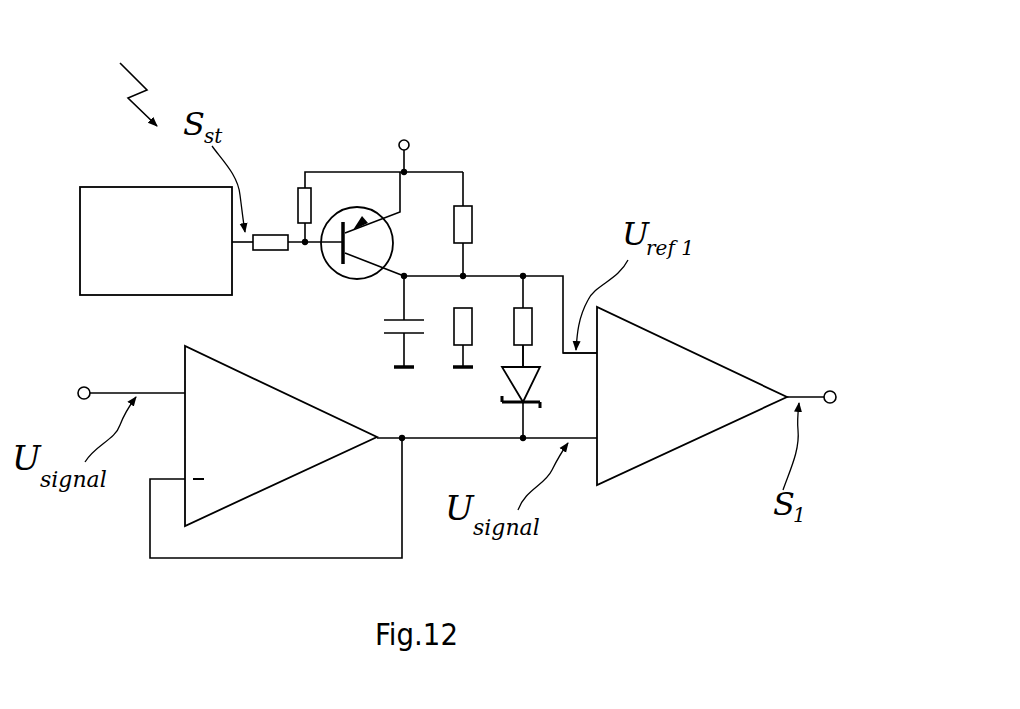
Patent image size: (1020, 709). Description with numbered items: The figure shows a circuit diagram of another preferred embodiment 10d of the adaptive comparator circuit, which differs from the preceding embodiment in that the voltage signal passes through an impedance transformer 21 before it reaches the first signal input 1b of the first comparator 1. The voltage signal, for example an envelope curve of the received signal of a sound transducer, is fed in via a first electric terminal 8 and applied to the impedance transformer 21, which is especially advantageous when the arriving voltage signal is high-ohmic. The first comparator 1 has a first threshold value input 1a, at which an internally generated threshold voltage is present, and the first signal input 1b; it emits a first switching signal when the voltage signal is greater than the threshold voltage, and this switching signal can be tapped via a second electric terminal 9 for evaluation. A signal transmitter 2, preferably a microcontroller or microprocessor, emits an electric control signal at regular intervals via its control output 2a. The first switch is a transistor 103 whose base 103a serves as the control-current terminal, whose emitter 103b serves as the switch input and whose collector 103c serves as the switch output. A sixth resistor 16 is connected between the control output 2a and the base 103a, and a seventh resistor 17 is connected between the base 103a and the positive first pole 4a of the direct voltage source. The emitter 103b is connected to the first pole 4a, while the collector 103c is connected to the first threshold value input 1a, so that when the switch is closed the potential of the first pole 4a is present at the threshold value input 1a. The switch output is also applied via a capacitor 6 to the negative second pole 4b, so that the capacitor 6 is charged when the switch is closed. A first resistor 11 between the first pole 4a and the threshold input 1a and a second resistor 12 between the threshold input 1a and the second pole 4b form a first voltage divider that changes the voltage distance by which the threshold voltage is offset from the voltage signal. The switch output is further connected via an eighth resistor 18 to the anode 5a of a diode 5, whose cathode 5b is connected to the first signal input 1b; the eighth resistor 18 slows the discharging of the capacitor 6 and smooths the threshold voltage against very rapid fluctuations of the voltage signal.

The adaptive comparator circuit 10d is at (121, 78).
The signal transmitter 2 is at (152, 185).
The control output 2a is at (235, 246).
The sixth resistor 16 is at (270, 252).
The seventh resistor 17 is at (298, 205).
The transistor 103 is at (380, 238).
The base 103a is at (333, 238).
The emitter 103b is at (380, 233).
The collector 103c is at (350, 280).
The positive first pole 4a is at (410, 144).
The first resistor 11 is at (472, 222).
The capacitor 6 is at (378, 330).
The second resistor 12 is at (452, 328).
The negative second pole 4b is at (405, 375).
The eighth resistor 18 is at (516, 310).
The diode 5 is at (512, 377).
The anode 5a is at (520, 363).
The cathode 5b is at (519, 406).
The first comparator 1 is at (606, 396).
The first threshold value input 1a is at (590, 362).
The first signal input 1b is at (591, 435).
The second electric terminal 9 is at (836, 390).
The first electric terminal 8 is at (81, 387).
The impedance transformer 21 is at (260, 473).